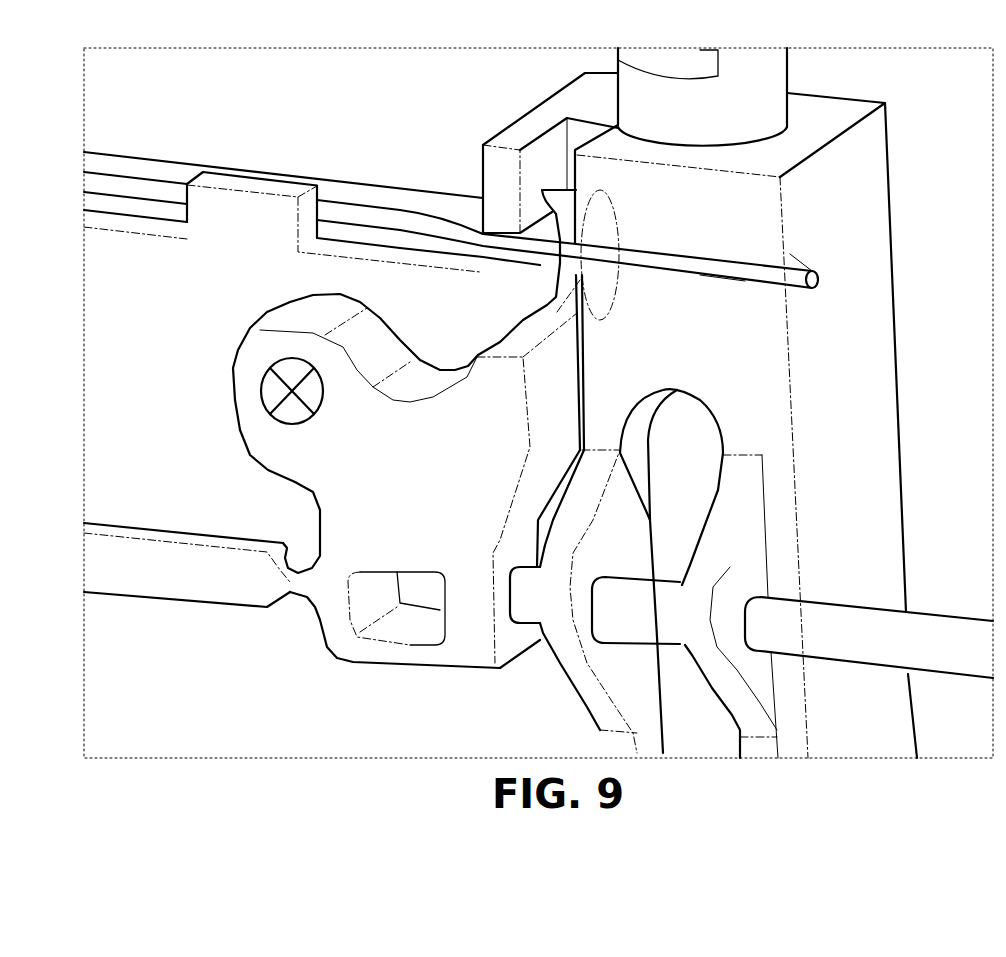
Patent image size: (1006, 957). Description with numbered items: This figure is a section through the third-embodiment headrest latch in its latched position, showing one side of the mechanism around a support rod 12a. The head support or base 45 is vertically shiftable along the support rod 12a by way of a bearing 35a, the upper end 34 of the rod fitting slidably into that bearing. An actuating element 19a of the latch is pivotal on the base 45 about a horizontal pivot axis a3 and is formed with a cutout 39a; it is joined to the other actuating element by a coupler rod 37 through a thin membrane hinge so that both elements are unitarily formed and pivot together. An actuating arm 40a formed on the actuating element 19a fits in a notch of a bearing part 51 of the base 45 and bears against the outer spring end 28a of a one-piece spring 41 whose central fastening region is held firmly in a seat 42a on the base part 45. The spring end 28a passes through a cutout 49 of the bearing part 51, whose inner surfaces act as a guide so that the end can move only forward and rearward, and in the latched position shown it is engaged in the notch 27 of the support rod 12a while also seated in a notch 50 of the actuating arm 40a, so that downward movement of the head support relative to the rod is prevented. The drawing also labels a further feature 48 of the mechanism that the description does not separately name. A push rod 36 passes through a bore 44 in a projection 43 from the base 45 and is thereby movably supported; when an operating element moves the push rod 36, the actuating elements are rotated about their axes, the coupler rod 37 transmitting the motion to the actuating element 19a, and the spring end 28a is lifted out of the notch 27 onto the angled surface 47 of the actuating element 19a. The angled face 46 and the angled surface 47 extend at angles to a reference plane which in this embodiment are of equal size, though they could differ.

The support rod 12a is at (640, 100).
The actuating element 19a is at (262, 440).
The notch 27 is at (625, 67).
The outer spring end 28a is at (733, 282).
The upper end of support rod 34 is at (768, 89).
The bearing 35a is at (880, 503).
The push rod 36 is at (948, 632).
The coupler rod 37 is at (152, 580).
The cutout 39a is at (398, 629).
The actuating arm 40a is at (602, 212).
The spring 41 is at (120, 180).
The seat 42a is at (232, 200).
The projection 43 is at (600, 477).
The bore 44 is at (617, 563).
The head support or base 45 is at (355, 195).
The angled face 46 is at (548, 299).
The angled surface 47 is at (483, 197).
The block 48 is at (546, 157).
The cutout 49 is at (797, 258).
The notch 50 is at (596, 257).
The bearing part 51 is at (889, 326).
The pivot axis a3 is at (292, 389).